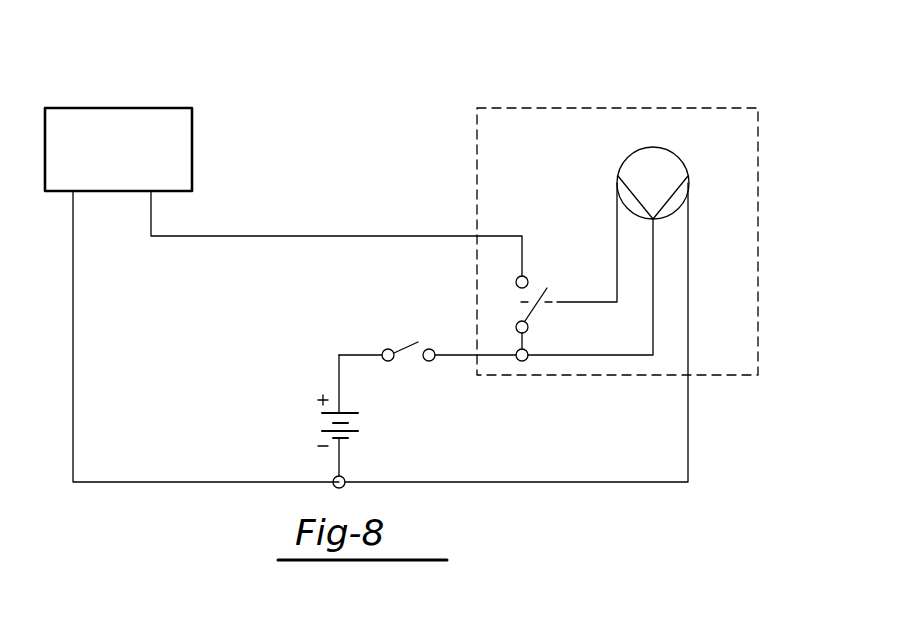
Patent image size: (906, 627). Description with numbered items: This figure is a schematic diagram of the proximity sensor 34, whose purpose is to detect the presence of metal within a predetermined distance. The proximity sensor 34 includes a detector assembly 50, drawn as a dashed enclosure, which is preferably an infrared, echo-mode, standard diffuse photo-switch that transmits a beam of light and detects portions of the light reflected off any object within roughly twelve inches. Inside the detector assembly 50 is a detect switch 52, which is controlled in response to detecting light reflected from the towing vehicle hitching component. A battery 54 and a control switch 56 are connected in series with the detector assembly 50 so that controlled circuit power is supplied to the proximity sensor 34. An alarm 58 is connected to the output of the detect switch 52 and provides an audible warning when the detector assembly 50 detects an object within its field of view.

The alarm 58 is at (150, 108).
The proximity sensor 34 is at (271, 156).
The detector assembly 50 is at (758, 212).
The detect switch 52 is at (545, 292).
The control switch 56 is at (405, 343).
The battery 54 is at (346, 413).